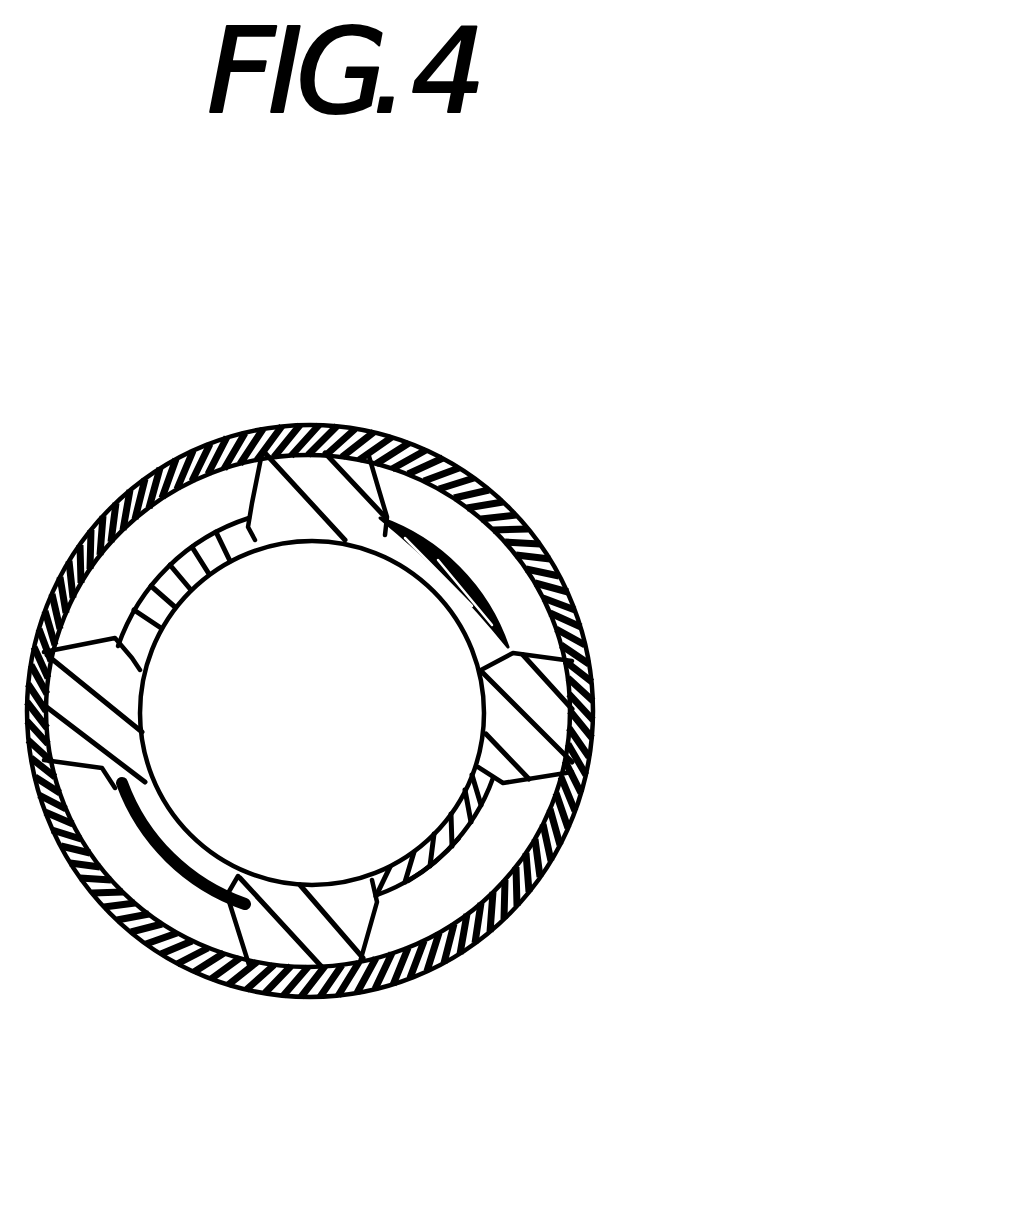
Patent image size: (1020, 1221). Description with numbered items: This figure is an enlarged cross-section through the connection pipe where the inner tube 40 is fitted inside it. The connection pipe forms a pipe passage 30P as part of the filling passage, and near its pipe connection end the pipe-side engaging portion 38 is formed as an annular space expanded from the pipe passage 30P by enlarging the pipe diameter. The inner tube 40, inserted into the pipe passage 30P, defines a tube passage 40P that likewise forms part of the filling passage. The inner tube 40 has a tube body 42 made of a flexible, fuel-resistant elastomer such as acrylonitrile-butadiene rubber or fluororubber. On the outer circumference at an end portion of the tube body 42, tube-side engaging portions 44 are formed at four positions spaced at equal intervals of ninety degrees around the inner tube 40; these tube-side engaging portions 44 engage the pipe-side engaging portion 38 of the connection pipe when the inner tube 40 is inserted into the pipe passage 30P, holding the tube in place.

The pipe-side engaging portion 38 is at (160, 527).
The tube-side engaging portion 44 is at (353, 470).
The pipe passage 30P is at (476, 592).
The inner tube 40 is at (178, 879).
The tube body 42 is at (415, 888).
The tube passage 40P is at (520, 843).